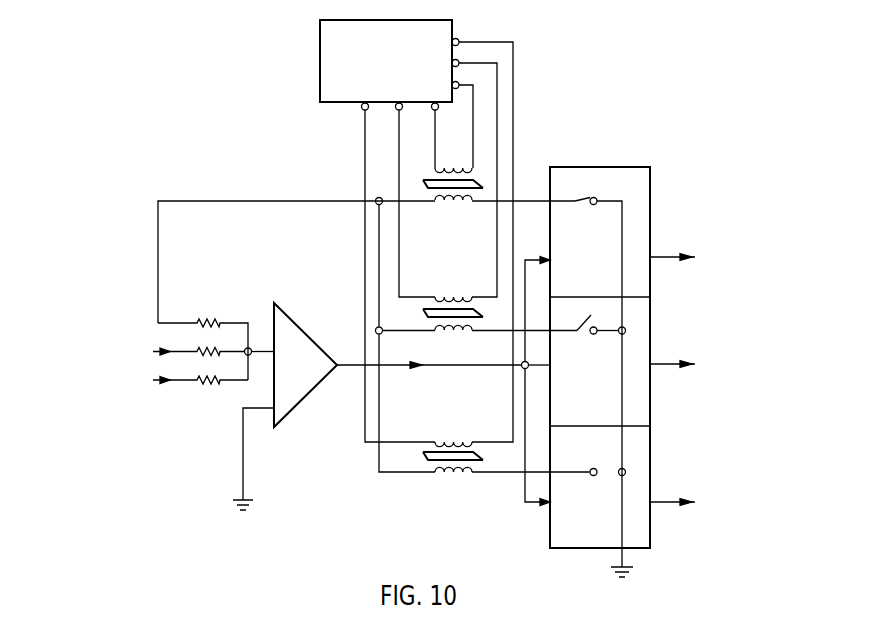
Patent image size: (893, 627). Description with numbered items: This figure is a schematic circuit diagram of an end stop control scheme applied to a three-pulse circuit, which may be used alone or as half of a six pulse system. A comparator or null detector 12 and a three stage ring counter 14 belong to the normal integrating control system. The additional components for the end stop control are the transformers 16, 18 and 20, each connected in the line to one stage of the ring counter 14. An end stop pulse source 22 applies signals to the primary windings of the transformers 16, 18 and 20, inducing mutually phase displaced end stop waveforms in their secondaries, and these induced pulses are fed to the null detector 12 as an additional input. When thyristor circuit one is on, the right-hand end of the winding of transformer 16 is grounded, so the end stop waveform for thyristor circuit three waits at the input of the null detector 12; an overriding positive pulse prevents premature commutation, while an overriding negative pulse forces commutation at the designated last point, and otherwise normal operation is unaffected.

The null detector 12 is at (303, 333).
The three stage ring counter 14 is at (653, 185).
The transformer 16 is at (440, 203).
The transformer 18 is at (440, 333).
The transformer 20 is at (447, 474).
The end stop pulse source 22 is at (320, 44).